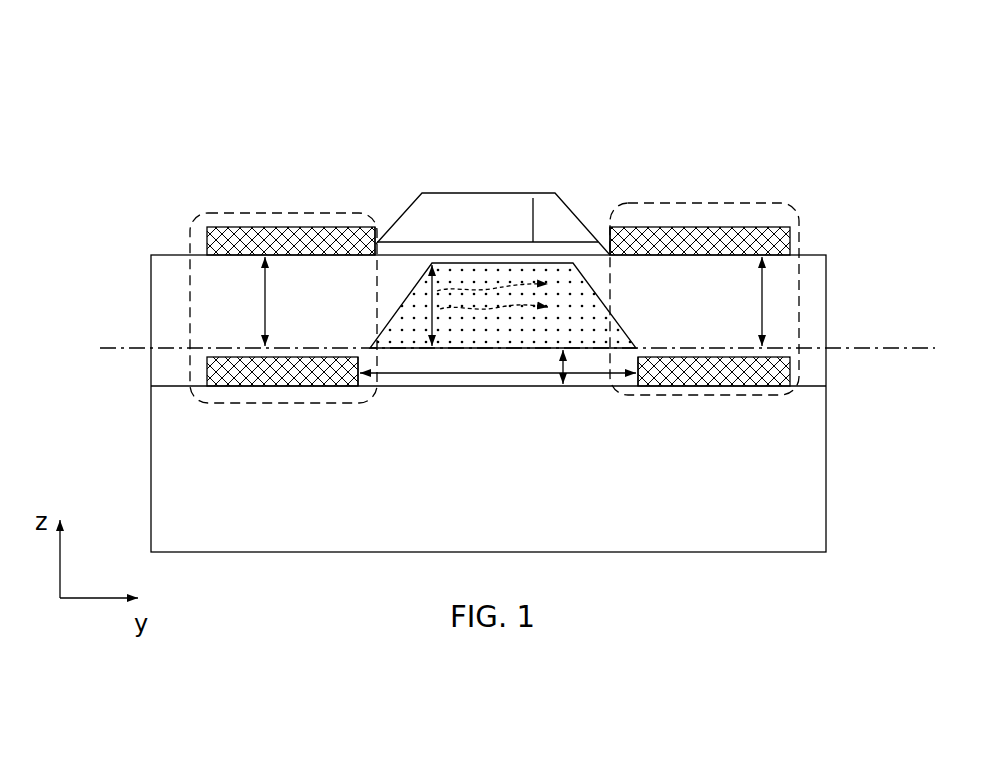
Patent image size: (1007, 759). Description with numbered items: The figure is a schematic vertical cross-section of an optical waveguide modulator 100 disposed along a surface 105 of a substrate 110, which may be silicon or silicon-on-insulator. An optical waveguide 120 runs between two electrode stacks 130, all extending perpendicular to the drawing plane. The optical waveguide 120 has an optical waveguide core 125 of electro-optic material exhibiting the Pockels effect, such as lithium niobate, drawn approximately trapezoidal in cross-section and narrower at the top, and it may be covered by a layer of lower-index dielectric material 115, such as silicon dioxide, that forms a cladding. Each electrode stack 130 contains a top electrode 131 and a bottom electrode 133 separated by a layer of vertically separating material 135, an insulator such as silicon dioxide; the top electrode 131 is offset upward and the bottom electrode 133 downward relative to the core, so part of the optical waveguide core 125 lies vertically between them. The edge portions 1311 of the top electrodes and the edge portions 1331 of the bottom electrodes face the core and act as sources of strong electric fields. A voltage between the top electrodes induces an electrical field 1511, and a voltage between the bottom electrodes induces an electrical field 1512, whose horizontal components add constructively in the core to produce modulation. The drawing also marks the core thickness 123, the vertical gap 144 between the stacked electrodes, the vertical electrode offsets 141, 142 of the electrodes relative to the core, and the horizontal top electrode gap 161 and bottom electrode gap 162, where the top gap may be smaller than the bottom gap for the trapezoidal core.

The optical waveguide modulator 100 is at (523, 31).
The surface of substrate 105 is at (807, 383).
The substrate 110 is at (207, 533).
The dielectric material 115 is at (515, 226).
The optical waveguide 120 is at (450, 128).
The thickness of optical waveguide core 123 is at (430, 298).
The optical waveguide core 125 is at (510, 340).
The electrode stack 130 is at (281, 213).
The top electrode 131 is at (230, 227).
The edge portion of top electrode 1311 is at (372, 222).
The bottom electrode 133 is at (277, 387).
The edge portion of bottom electrode 1331 is at (357, 346).
The vertically separating material 135 is at (252, 316).
The vertical electrode offset 141 is at (265, 283).
The vertical electrode offset 142 is at (567, 386).
The vertical gap 144 is at (762, 287).
The electrical field 1511 is at (447, 288).
The electrical field 1512 is at (450, 312).
The top electrode gap 161 is at (533, 200).
The bottom electrode gap 162 is at (533, 373).